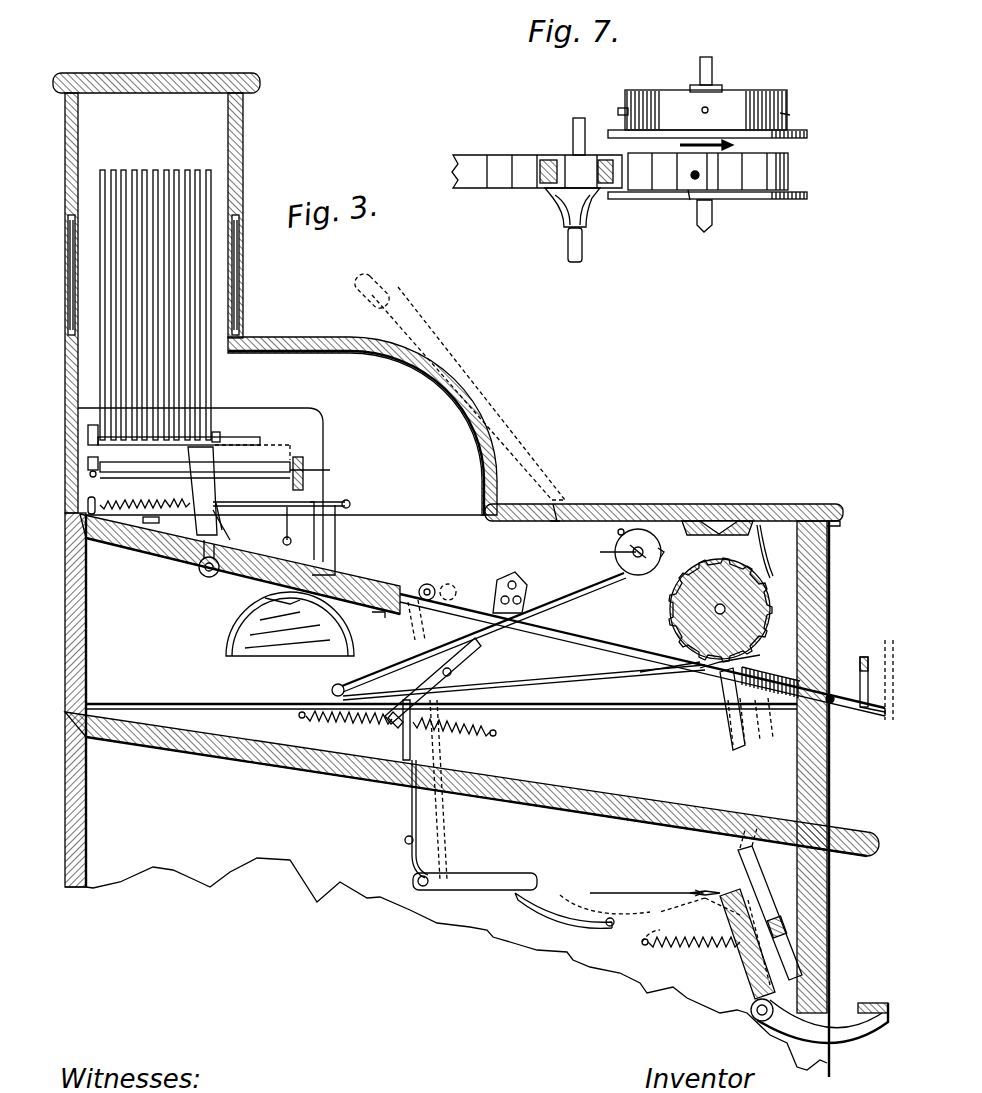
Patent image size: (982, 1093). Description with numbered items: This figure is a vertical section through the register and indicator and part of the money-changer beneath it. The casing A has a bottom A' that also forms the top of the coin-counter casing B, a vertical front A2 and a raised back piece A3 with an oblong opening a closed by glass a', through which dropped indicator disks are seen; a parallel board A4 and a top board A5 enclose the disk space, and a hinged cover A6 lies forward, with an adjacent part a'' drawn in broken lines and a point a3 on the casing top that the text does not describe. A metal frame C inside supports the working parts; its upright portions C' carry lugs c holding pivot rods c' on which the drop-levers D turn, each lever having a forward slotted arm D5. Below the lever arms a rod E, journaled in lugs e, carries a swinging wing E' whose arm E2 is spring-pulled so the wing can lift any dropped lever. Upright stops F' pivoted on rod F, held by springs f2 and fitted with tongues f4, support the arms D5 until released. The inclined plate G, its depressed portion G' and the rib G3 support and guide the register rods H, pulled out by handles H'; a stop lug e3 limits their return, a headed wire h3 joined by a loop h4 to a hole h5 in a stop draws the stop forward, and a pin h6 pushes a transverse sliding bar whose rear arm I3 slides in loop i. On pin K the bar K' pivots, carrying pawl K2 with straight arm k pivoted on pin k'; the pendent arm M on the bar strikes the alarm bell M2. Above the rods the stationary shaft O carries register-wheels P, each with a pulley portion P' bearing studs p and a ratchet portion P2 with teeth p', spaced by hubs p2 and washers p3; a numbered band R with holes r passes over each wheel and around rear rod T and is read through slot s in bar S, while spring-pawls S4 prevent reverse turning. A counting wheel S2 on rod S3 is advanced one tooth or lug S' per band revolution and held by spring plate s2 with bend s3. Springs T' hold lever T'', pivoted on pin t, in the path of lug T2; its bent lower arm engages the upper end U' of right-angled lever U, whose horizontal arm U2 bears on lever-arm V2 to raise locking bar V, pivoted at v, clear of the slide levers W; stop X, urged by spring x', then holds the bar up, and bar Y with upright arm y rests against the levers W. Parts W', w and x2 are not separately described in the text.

In FIG. 3, the casing A is at (464, 606).
In FIG. 3, the casing bottom A' is at (472, 784).
In FIG. 3, the vertical front A2 is at (830, 642).
In FIG. 3, the back piece A3 is at (80, 160).
In FIG. 3, the transverse vertical board A4 is at (244, 180).
In FIG. 3, the top board A5 is at (156, 73).
In FIG. 3, the cover A6 is at (705, 520).
In FIG. 3, the oblong opening a is at (170, 272).
In FIG. 3, the glass a' is at (176, 286).
In FIG. 3, the swinging arm a'' is at (458, 385).
In FIG. 3, the pivot a3 is at (516, 505).
In FIG. 3, the coin-counter casing B is at (88, 786).
In FIG. 3, the metal frame C is at (472, 584).
In FIG. 3, the frame upright portion C' is at (287, 444).
In FIG. 3, the lugs c is at (163, 422).
In FIG. 3, the pivot rods c' is at (73, 454).
In FIG. 3, the drop-levers D is at (152, 305).
In FIG. 3, the slotted arms D5 is at (252, 438).
In FIG. 3, the horizontal rod E is at (315, 471).
In FIG. 3, the swinging wing E' is at (195, 466).
In FIG. 3, the wing arm E2 is at (281, 492).
In FIG. 3, the lugs e is at (90, 474).
In FIG. 3, the stop pin e3 is at (839, 685).
In FIG. 3, the rod F is at (209, 571).
In FIG. 3, the swinging stops F' is at (202, 491).
In FIG. 3, the springs f2 is at (139, 496).
In FIG. 3, the tongue f4 is at (216, 430).
In FIG. 3, the supporting plate G is at (240, 564).
In FIG. 3, the depressed plate portion G' is at (375, 628).
In FIG. 3, the upright rib G3 is at (428, 586).
In FIG. 3, the rods H is at (642, 655).
In FIG. 3, the handles H' is at (875, 674).
In FIG. 3, the connecting wire h3 is at (276, 526).
In FIG. 3, the loop h4 is at (227, 522).
In FIG. 3, the hole h5 is at (231, 499).
In FIG. 3, the pin h6 is at (450, 584).
In FIG. 3, the arm I3 is at (324, 538).
In FIG. 3, the loop i is at (160, 520).
In FIG. 3, the pin K is at (713, 678).
In FIG. 3, the pivoted bar K' is at (716, 706).
In FIG. 3, the pawl K2 is at (728, 702).
In FIG. 3, the straight pawl arm k is at (771, 697).
In FIG. 3, the pin k' is at (762, 692).
In FIG. 3, the pendent arm M is at (290, 596).
In FIG. 3, the alarm-bell M2 is at (240, 627).
In FIG. 3, the register-wheels P is at (720, 598).
In FIG. 7, the register-wheels P is at (722, 130).
In FIG. 7, the pulley portion P' is at (785, 116).
In FIG. 7, the ratchet portion P2 is at (808, 135).
In FIG. 7, the studs p is at (651, 160).
In FIG. 3, the ratchet-teeth p' is at (701, 615).
In FIG. 7, the ratchet-teeth p' is at (778, 162).
In FIG. 7, the hubs p2 is at (706, 229).
In FIG. 7, the washers p3 is at (678, 147).
In FIG. 3, the band R is at (565, 680).
In FIG. 7, the band R is at (520, 152).
In FIG. 3, the holes r is at (608, 598).
In FIG. 7, the holes r is at (698, 174).
In FIG. 3, the transverse bar S is at (684, 530).
In FIG. 3, the tooth or lug S' is at (681, 552).
In FIG. 7, the tooth or lug S' is at (576, 159).
In FIG. 3, the counting wheel S2 is at (615, 565).
In FIG. 7, the counting wheel S2 is at (550, 196).
In FIG. 3, the rod S3 is at (608, 547).
In FIG. 7, the rod S3 is at (568, 252).
In FIG. 3, the spring-pawls S4 is at (766, 556).
In FIG. 3, the slot s is at (707, 545).
In FIG. 3, the spring plate s2 is at (652, 520).
In FIG. 3, the upward bend s3 is at (615, 520).
In FIG. 7, the stationary shaft O is at (713, 70).
In FIG. 3, the cylindrical rod T is at (392, 681).
In FIG. 3, the springs T' is at (397, 710).
In FIG. 3, the pivoted lever T'' is at (394, 730).
In FIG. 3, the lug T2 is at (420, 625).
In FIG. 3, the pivot pin t is at (466, 666).
In FIG. 3, the right-angled lever U is at (434, 819).
In FIG. 3, the upper end of lever U U' is at (441, 790).
In FIG. 3, the horizontal arm U2 is at (532, 873).
In FIG. 3, the locking bar V is at (708, 888).
In FIG. 3, the lever-arm V2 is at (560, 892).
In FIG. 3, the pivot v is at (608, 926).
In FIG. 3, the slide-operating levers W is at (741, 944).
In FIG. 3, the foot W' is at (843, 1009).
In FIG. 3, the spring w is at (691, 954).
In FIG. 3, the swinging stop X is at (772, 918).
In FIG. 3, the spring x' is at (655, 948).
In FIG. 3, the pin x2 is at (760, 892).
In FIG. 3, the swinging bar Y is at (822, 1018).
In FIG. 3, the upright arm y is at (752, 978).